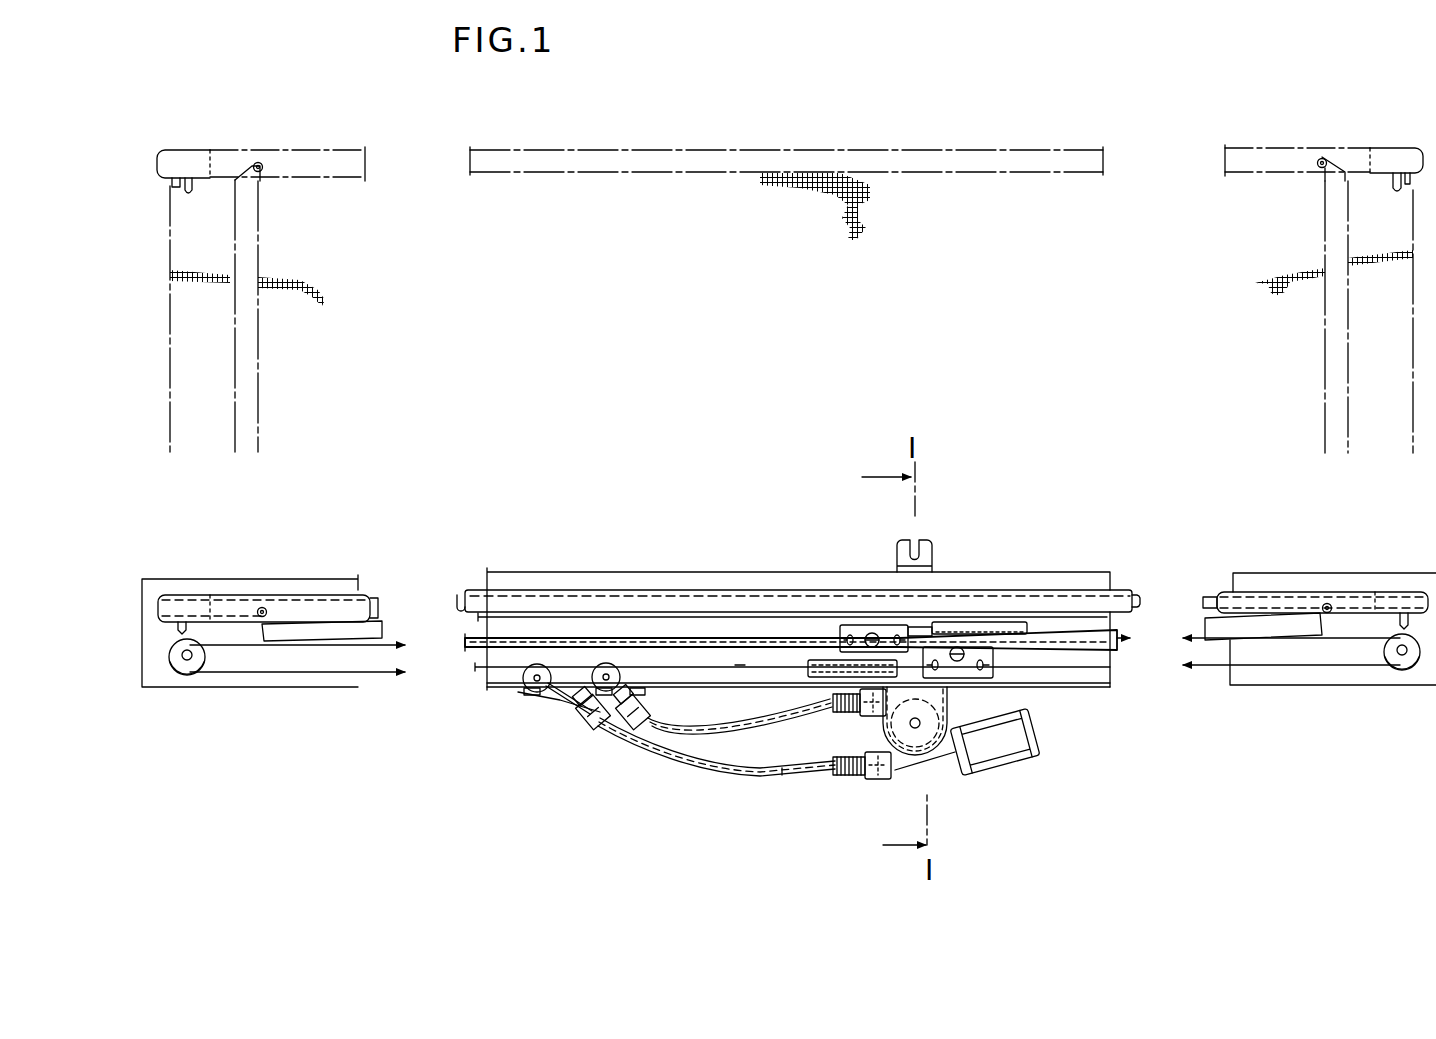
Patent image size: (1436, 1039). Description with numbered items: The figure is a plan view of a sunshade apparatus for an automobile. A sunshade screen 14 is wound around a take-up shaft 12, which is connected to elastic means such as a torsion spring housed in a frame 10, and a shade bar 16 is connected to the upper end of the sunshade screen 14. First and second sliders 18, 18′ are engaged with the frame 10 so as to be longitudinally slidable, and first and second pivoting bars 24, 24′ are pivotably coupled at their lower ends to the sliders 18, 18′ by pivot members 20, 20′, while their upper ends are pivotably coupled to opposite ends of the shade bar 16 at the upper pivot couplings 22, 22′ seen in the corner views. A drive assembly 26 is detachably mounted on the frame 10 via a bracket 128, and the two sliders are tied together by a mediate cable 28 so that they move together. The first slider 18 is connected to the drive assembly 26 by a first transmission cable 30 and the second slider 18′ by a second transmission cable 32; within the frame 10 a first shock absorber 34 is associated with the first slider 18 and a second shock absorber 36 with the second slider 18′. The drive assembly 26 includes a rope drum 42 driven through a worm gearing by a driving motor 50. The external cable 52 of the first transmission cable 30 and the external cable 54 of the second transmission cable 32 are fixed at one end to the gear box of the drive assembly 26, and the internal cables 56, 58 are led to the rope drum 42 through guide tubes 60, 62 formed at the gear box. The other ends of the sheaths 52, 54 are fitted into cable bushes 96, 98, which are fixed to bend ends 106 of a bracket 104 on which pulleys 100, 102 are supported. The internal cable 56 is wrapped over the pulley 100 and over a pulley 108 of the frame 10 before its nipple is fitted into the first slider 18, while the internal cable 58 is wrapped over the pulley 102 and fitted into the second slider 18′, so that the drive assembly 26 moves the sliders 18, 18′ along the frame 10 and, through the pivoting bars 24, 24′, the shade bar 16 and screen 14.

The frame 10 is at (750, 570).
The take-up shaft 12 is at (681, 596).
The sunshade screen 14 is at (815, 185).
The shade bar 16 is at (776, 150).
The first slider 18 is at (896, 620).
The second slider 18′ is at (968, 664).
The pivot member 20 is at (870, 636).
The pivot member 20′ is at (958, 650).
The pivot joint 22 is at (260, 162).
The second pivot joint 22′ is at (1323, 159).
The first pivoting bar 24 is at (258, 376).
The second pivoting bar 24′ is at (1325, 362).
The drive assembly 26 is at (938, 776).
The mediate cable 28 is at (1197, 665).
The first transmission cable 30 is at (801, 727).
The second transmission cable 32 is at (768, 778).
The first shock absorber 34 is at (1020, 622).
The second shock absorber 36 is at (818, 658).
The rope drum 42 is at (905, 772).
The driving motor 50 is at (1018, 758).
The external cable 52 is at (776, 715).
The external cable 54 is at (751, 768).
The internal cable 56 is at (377, 672).
The internal cable 58 is at (736, 667).
The guide tube 60 is at (868, 716).
The guide tube 62 is at (875, 779).
The cable bush 96 is at (594, 724).
The cable bush 98 is at (639, 724).
The pulley 100 is at (535, 690).
The pulley 102 is at (605, 663).
The bracket 104 is at (548, 712).
The bend ends 106 is at (583, 704).
The pulley 108 is at (182, 672).
The bracket 128 is at (948, 690).